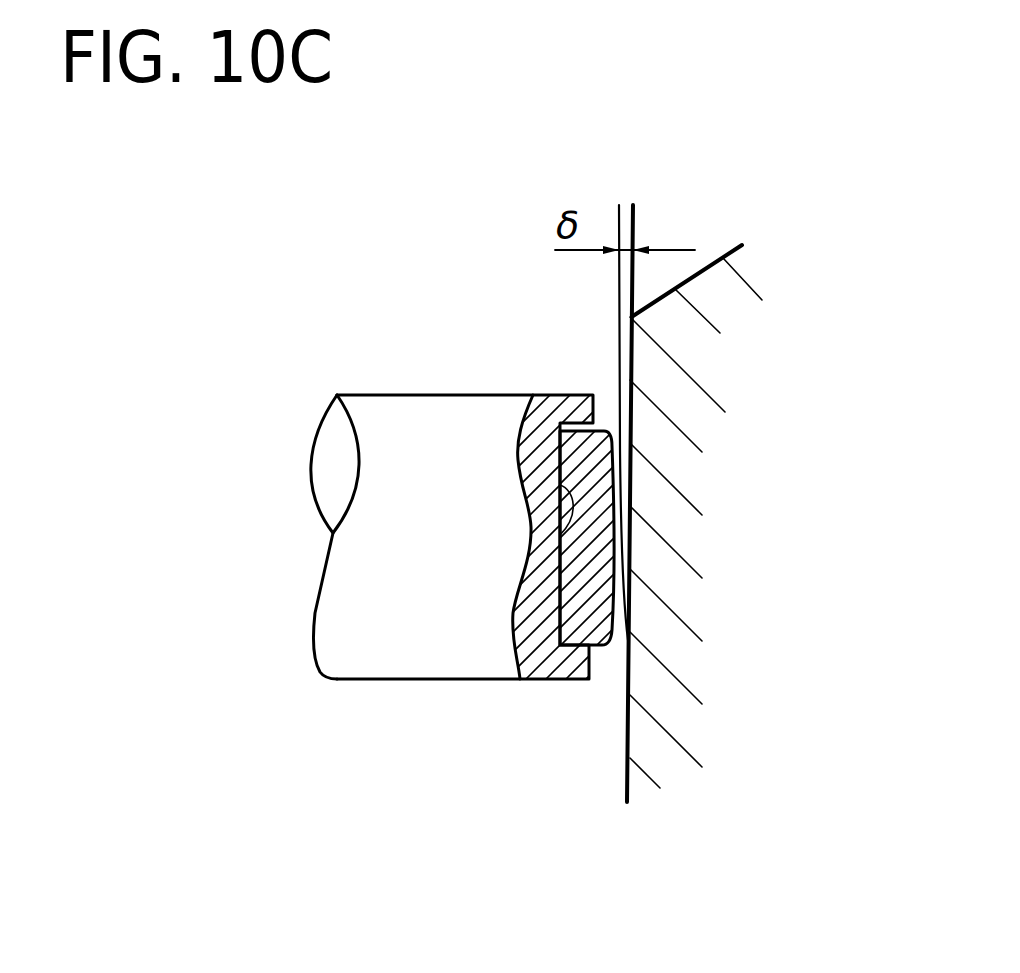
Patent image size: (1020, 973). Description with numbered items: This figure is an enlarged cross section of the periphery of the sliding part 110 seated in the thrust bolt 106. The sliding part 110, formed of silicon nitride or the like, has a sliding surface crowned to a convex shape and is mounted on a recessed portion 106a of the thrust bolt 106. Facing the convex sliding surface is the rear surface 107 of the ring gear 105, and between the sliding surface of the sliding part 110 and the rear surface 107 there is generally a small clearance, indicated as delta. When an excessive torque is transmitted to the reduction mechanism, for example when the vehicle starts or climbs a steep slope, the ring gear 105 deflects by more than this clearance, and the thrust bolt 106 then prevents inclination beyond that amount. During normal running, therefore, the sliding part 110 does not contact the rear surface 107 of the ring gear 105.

The ring gear 105 is at (718, 272).
The rear surface 107 is at (618, 347).
The sliding part 110 is at (606, 601).
The thrust bolt 106 is at (375, 653).
The recessed portion 106a is at (512, 624).